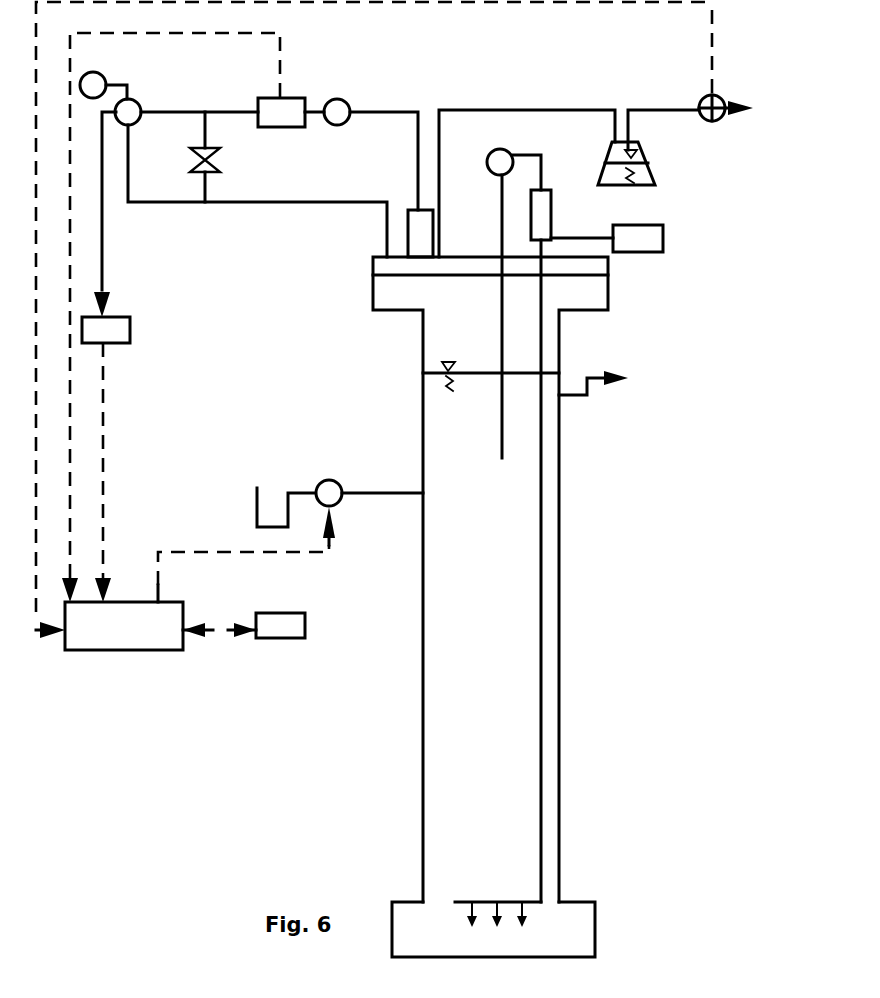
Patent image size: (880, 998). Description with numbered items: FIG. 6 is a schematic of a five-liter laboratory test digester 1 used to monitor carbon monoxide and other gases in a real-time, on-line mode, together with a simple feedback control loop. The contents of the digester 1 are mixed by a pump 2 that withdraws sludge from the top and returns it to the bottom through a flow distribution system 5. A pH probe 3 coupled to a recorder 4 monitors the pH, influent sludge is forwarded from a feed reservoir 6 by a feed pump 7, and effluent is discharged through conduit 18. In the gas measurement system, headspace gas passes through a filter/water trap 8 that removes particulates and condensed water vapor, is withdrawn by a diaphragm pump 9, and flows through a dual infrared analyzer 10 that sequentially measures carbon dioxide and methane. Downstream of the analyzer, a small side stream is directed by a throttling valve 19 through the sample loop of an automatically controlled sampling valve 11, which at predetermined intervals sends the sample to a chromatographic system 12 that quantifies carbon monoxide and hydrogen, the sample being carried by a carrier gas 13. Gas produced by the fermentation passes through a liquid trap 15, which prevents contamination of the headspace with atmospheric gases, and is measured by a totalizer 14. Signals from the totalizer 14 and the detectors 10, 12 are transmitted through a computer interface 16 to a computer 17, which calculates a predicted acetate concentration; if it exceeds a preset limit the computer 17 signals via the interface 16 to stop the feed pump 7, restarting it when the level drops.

The digester 1 is at (490, 607).
The pump 2 is at (487, 162).
The pH probe 3 is at (549, 190).
The recorder 4 is at (663, 238).
The flow distribution system 5 is at (496, 900).
The feed reservoir 6 is at (257, 507).
The feed pump 7 is at (328, 478).
The filter/water trap 8 is at (408, 208).
The diaphragm pump 9 is at (337, 125).
The dual infrared analyzer 10 is at (282, 127).
The sampling valve 11 is at (138, 103).
The chromatographic system 12 is at (130, 330).
The carrier gas 13 is at (97, 70).
The totalizer 14 is at (722, 97).
The liquid trap 15 is at (647, 155).
The computer interface 16 is at (122, 650).
The computer 17 is at (281, 613).
The conduit 18 is at (614, 381).
The throttling valve 19 is at (190, 160).